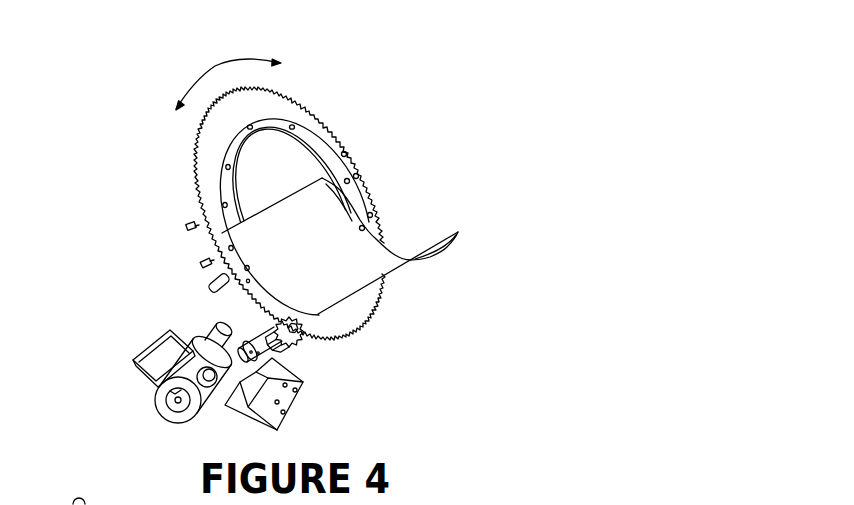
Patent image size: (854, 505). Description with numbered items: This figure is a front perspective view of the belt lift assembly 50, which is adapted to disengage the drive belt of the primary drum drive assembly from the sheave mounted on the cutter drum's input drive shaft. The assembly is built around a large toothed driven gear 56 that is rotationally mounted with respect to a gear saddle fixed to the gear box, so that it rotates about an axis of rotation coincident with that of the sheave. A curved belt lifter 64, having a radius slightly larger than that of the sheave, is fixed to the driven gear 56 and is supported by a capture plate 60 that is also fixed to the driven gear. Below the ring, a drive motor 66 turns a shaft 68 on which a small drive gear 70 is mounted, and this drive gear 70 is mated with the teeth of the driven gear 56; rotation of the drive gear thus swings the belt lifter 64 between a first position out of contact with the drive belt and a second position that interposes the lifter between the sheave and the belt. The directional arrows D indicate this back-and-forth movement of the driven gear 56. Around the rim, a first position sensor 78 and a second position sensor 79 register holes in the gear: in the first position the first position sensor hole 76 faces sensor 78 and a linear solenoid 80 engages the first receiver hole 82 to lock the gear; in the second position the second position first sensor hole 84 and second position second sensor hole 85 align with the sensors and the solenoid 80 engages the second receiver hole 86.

The belt lift assembly 50 is at (380, 80).
The driven gear 56 is at (191, 143).
The directional arrows D is at (216, 64).
The capture plate 60 is at (282, 114).
The belt lifter 64 is at (347, 265).
The drive motor 66 is at (157, 417).
The shaft 68 is at (262, 327).
The drive gear 70 is at (298, 350).
The first position sensor hole 76 is at (242, 243).
The first position sensor 78 is at (201, 266).
The second position sensor 79 is at (181, 230).
The linear solenoid 80 is at (207, 294).
The first receiver hole 82 is at (253, 265).
The second position first sensor hole 84 is at (368, 170).
The second position second sensor hole 85 is at (379, 209).
The second receiver hole 86 is at (351, 147).